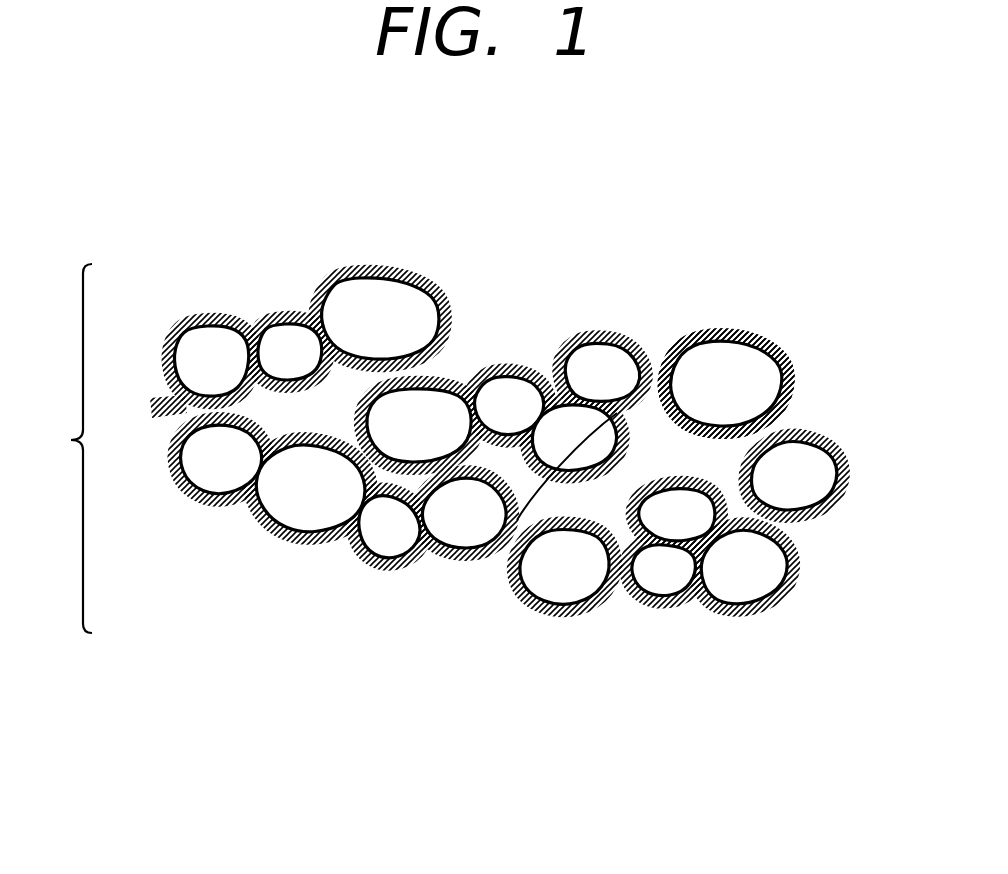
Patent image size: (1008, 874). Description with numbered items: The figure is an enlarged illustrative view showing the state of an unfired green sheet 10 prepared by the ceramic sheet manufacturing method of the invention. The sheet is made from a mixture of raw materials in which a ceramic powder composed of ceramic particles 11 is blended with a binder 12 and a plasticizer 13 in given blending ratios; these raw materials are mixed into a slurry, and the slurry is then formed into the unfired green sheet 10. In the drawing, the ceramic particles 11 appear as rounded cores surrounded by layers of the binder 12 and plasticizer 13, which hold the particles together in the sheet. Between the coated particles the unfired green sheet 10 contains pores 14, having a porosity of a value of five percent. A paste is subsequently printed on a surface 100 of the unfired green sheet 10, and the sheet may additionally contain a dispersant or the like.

The unfired green sheet 10 is at (61, 448).
The ceramic particles 11 is at (373, 295).
The binder 12 is at (282, 320).
The plasticizer 13 is at (607, 326).
The pores 14 is at (706, 460).
The surface 100 is at (458, 263).